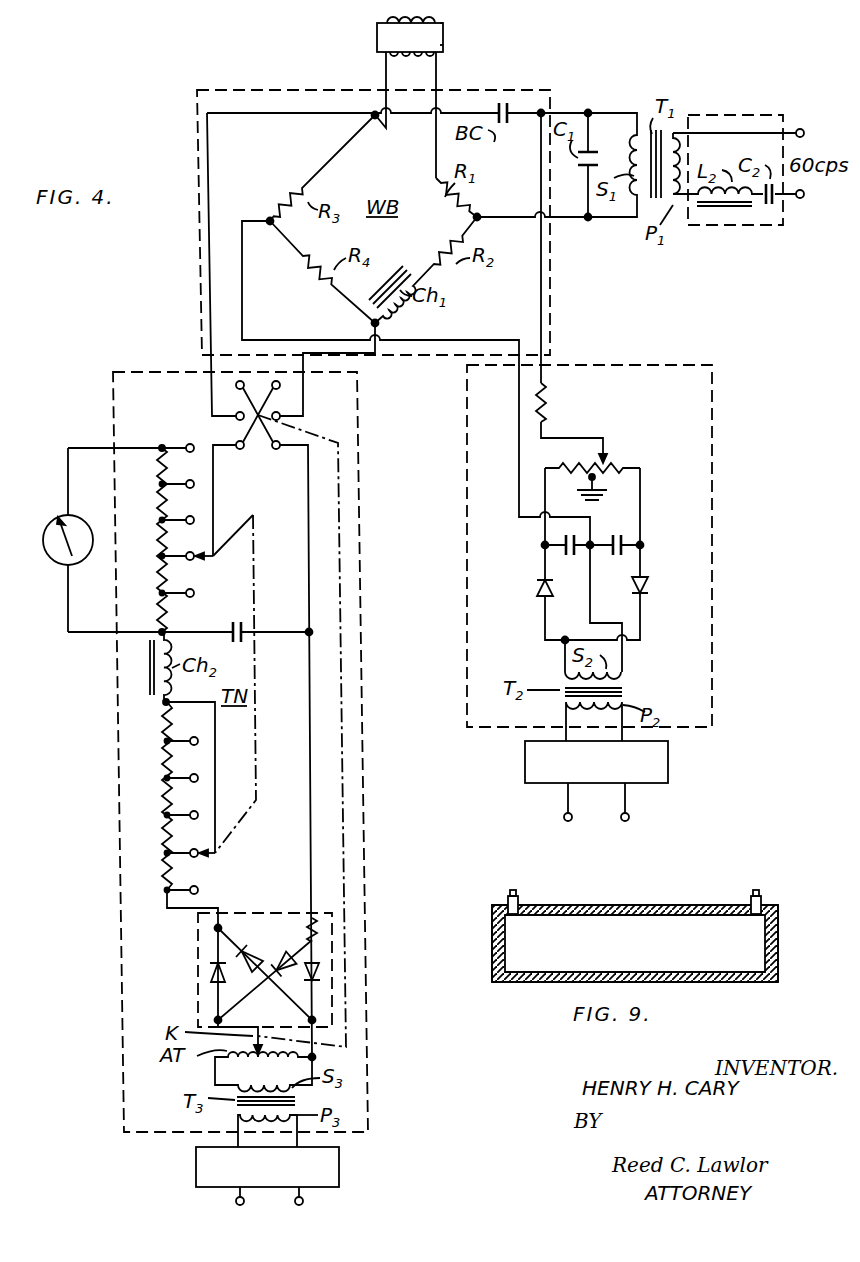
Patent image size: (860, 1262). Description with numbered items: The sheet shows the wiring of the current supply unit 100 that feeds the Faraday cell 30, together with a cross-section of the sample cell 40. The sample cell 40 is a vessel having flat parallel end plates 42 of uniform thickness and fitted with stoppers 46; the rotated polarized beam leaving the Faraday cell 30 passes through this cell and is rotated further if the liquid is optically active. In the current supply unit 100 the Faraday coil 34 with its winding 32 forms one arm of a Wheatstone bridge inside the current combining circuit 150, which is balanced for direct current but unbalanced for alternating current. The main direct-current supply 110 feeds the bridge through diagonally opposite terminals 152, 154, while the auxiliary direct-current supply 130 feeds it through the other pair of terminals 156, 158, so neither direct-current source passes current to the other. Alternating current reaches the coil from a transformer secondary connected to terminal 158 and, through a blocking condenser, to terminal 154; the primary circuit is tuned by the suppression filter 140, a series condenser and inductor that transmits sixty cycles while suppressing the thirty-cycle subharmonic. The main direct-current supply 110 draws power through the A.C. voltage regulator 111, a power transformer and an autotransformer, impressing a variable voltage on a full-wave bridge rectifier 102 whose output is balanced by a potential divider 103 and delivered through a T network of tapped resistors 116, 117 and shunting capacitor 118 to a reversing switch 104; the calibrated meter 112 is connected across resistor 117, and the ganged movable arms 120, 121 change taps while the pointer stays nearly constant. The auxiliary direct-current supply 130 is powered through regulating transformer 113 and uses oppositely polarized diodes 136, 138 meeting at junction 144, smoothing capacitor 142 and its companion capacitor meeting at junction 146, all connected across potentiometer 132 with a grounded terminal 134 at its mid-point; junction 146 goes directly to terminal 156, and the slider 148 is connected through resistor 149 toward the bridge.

In FIG. 4, the Faraday cell 30 is at (377, 38).
In FIG. 4, the coil winding 32 is at (443, 45).
In FIG. 4, the Faraday coil 34 is at (443, 23).
In FIG. 4, the current combining circuit 150 is at (255, 88).
In FIG. 4, the bridge terminal 152 is at (372, 322).
In FIG. 4, the bridge terminal 154 is at (374, 120).
In FIG. 4, the bridge terminal 156 is at (268, 219).
In FIG. 4, the bridge terminal 158 is at (478, 215).
In FIG. 4, the 30-c.p.s. suppression filter 140 is at (728, 114).
In FIG. 4, the main direct-current supply 110 is at (148, 370).
In FIG. 4, the reversing switch 104 is at (237, 428).
In FIG. 4, the current meter 112 is at (96, 503).
In FIG. 4, the tapped resistor 117 is at (160, 540).
In FIG. 4, the shunting capacitor 118 is at (232, 620).
In FIG. 4, the movable arm 121 is at (203, 560).
In FIG. 4, the tapped resistor 116 is at (165, 763).
In FIG. 4, the movable arm 120 is at (210, 858).
In FIG. 4, the full-wave bridge rectifier 102 is at (197, 952).
In FIG. 4, the potential divider 103 is at (305, 936).
In FIG. 4, the current supply unit 100 is at (425, 626).
In FIG. 4, the A.C. voltage regulator 111 is at (339, 1167).
In FIG. 4, the auxiliary direct-current supply 130 is at (714, 408).
In FIG. 4, the resistor 149 is at (547, 404).
In FIG. 4, the slider 148 is at (607, 445).
In FIG. 4, the potentiometer 132 is at (580, 465).
In FIG. 4, the grounded terminal 134 is at (595, 486).
In FIG. 4, the junction 146 is at (592, 543).
In FIG. 4, the capacitor 142 is at (620, 556).
In FIG. 4, the diode 136 is at (540, 588).
In FIG. 4, the diode 138 is at (650, 586).
In FIG. 4, the junction 144 is at (563, 642).
In FIG. 4, the regulating transformer 113 is at (669, 761).
In FIG. 9, the sample cell 40 is at (656, 907).
In FIG. 9, the end plate 42 is at (492, 947).
In FIG. 9, the stopper 46 is at (507, 902).